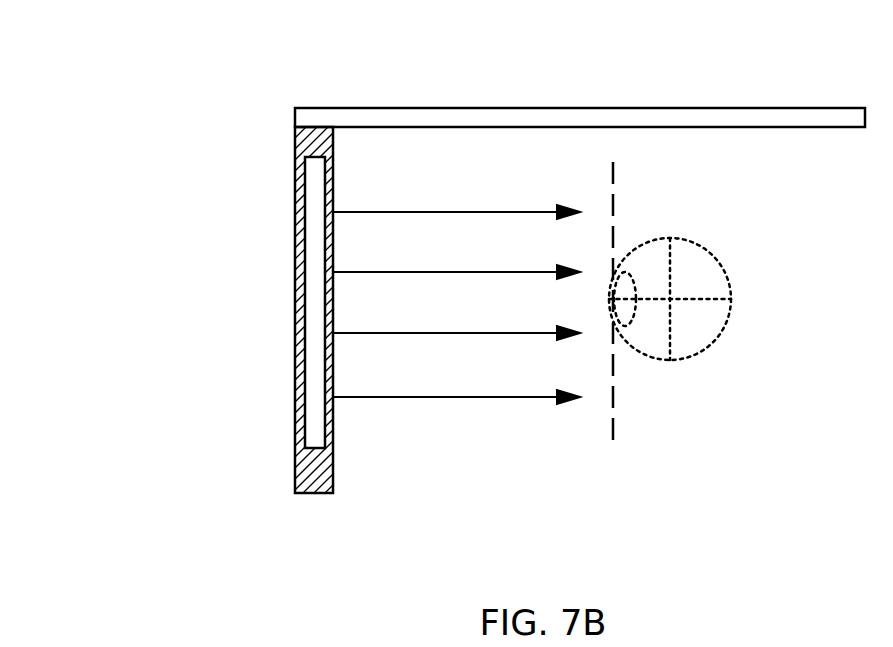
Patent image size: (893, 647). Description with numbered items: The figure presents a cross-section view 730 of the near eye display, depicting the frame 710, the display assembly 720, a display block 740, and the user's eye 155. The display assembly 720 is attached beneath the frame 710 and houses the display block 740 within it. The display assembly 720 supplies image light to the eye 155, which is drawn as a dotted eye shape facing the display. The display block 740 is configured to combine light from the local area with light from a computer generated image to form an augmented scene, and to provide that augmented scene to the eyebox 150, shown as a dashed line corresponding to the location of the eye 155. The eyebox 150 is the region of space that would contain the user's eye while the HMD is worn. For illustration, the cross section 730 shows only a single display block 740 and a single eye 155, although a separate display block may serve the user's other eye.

The cross-section view 730 is at (83, 64).
The frame 710 is at (793, 107).
The display assembly 720 is at (297, 380).
The display block 740 is at (317, 208).
The eyebox 150 is at (613, 430).
The eye 155 is at (713, 255).